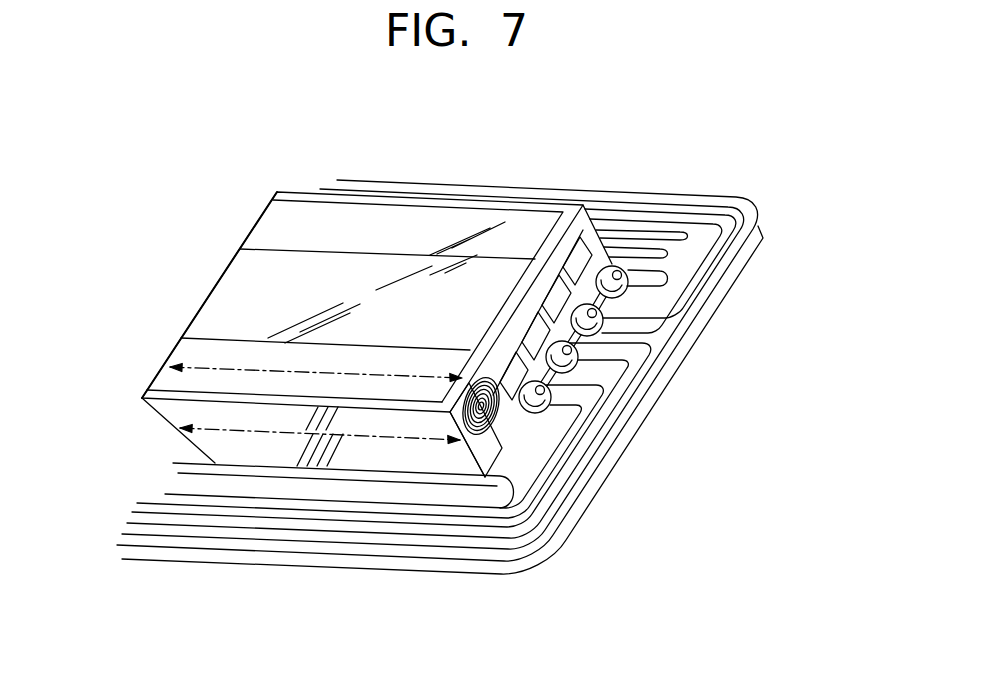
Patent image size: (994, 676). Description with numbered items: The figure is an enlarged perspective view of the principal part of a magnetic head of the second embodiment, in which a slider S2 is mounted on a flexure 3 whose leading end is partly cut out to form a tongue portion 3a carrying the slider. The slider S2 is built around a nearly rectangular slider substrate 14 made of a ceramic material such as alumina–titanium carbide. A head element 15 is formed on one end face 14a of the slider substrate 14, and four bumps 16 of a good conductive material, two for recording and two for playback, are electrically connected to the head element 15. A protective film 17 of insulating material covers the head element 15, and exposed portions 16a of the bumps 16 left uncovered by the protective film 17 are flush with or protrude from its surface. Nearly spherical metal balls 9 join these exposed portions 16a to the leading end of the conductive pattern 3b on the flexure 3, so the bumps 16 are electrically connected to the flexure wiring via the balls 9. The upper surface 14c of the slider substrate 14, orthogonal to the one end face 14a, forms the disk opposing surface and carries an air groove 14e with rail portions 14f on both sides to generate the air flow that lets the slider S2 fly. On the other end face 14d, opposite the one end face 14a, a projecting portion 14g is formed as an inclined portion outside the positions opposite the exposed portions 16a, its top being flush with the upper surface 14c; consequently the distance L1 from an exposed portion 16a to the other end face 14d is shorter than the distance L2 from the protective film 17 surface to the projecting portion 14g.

The flexure 3 is at (762, 215).
The tongue portion 3a is at (323, 478).
The conductive pattern 3b is at (560, 413).
The balls 9 is at (523, 417).
The slider substrate 14 is at (245, 226).
The one end face 14a is at (585, 245).
The upper surface 14c is at (283, 250).
The other end face 14d is at (185, 447).
The air groove 14e is at (322, 283).
The rail portions 14f is at (380, 362).
The projecting portion 14g is at (142, 400).
The head element 15 is at (500, 428).
The bumps 16 is at (507, 372).
The exposed portions 16a is at (513, 418).
The protective film 17 is at (615, 190).
The distance L1 is at (200, 428).
The distance L2 is at (217, 367).
The slider S2 is at (200, 262).